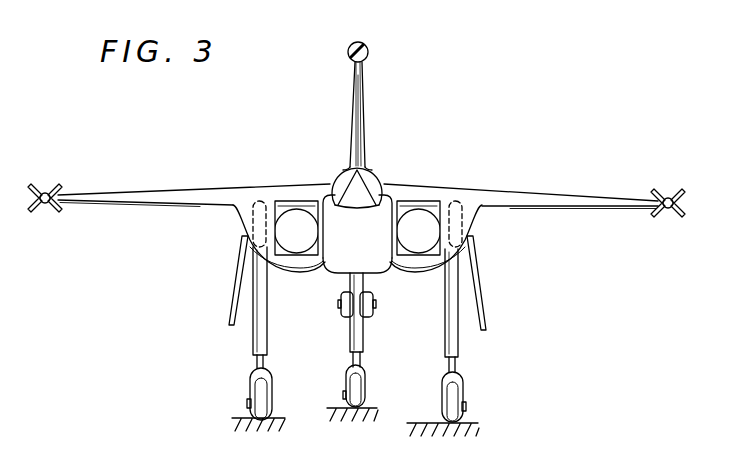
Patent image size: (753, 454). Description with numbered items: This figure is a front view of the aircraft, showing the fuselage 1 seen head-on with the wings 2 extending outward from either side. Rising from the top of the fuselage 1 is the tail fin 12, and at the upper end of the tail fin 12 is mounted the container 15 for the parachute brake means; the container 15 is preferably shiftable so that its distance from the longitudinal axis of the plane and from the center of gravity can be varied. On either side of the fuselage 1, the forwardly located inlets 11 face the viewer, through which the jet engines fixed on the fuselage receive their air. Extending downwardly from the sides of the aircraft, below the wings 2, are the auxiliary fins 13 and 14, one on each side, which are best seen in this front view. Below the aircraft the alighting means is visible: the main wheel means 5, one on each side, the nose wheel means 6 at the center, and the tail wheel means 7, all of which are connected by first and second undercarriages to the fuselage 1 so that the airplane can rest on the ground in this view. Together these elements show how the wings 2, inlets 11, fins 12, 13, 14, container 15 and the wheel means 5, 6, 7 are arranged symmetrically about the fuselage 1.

The fuselage 1 is at (385, 205).
The wings 2 is at (567, 198).
The main wheel means 5 is at (258, 390).
The nose wheel means 6 is at (361, 388).
The tail wheel means 7 is at (374, 313).
The inlets 11 is at (293, 248).
The tail fin 12 is at (362, 106).
The auxiliary fin 13 is at (240, 268).
The auxiliary fin 14 is at (478, 291).
The container 15 is at (368, 47).